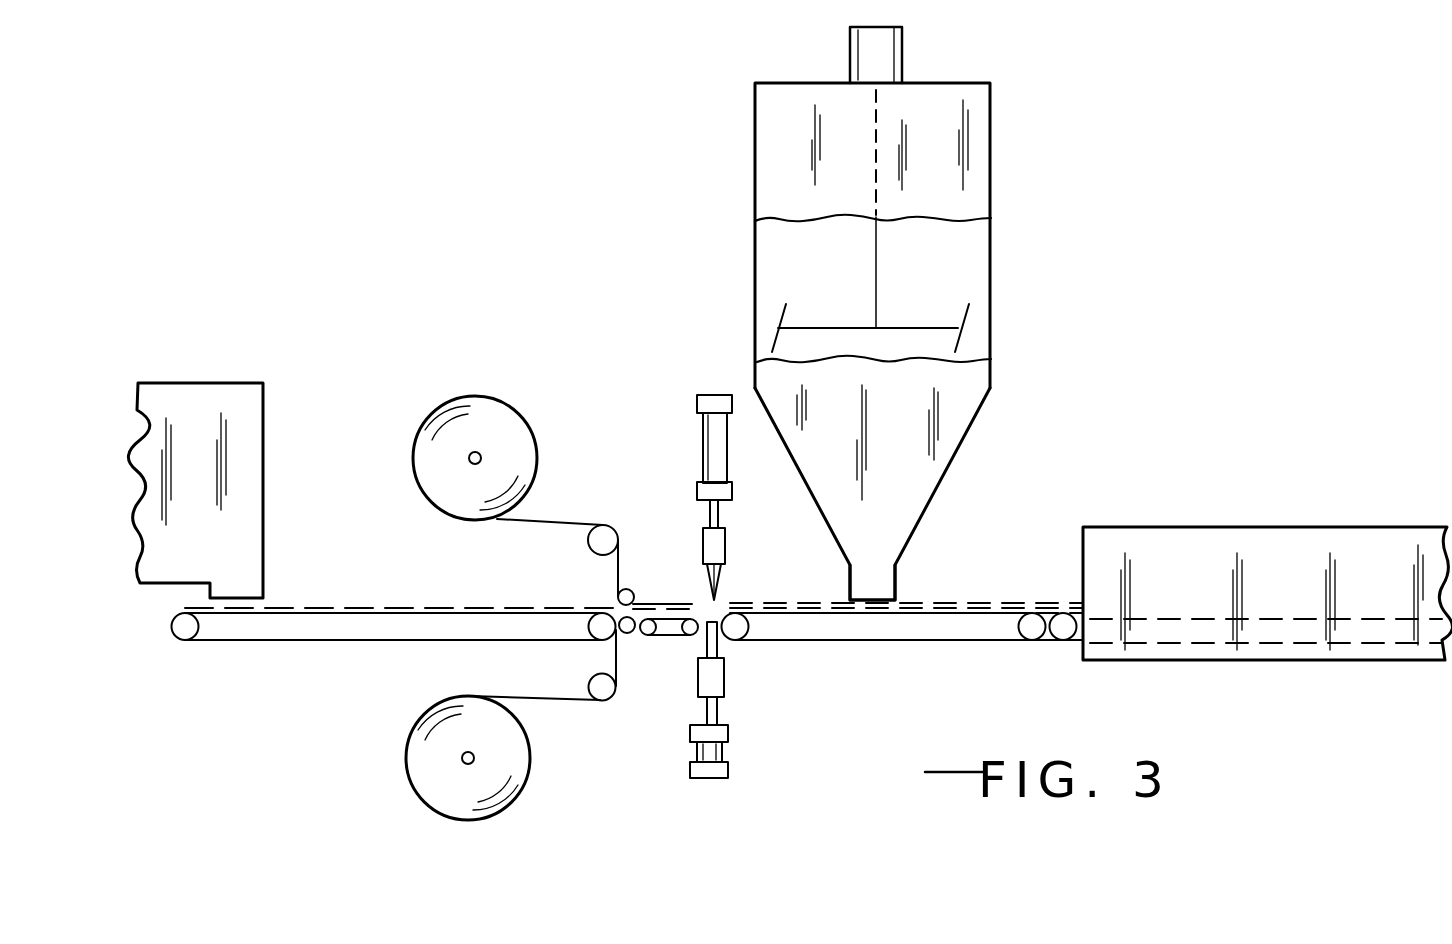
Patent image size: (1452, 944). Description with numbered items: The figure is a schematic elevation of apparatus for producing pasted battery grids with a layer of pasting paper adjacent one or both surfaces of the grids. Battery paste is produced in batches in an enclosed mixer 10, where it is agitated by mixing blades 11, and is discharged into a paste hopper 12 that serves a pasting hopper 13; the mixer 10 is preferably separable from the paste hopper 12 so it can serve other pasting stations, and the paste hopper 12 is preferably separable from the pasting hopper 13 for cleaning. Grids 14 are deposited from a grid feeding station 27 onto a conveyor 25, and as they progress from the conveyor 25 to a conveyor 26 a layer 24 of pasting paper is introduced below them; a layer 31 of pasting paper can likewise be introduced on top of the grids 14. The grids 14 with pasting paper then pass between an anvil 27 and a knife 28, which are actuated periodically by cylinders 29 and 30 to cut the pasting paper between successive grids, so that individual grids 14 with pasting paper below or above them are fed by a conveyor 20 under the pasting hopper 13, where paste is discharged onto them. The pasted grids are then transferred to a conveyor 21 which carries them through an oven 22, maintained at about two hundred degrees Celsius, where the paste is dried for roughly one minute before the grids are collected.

The mixer 10 is at (991, 247).
The mixing blades 11 is at (787, 312).
The paste hopper 12 is at (970, 432).
The pasting hopper 13 is at (897, 577).
The grids 14 is at (365, 600).
The conveyor 20 is at (858, 655).
The conveyor 21 is at (1200, 645).
The oven 22 is at (1250, 527).
The layer of pasting paper 24 is at (615, 661).
The conveyor 25 is at (265, 641).
The conveyor 26 is at (668, 645).
The grid feeding station / anvil 27 is at (263, 422).
The knife 28 is at (720, 596).
The cylinder 29 is at (728, 752).
The cylinder 30 is at (695, 446).
The layer of pasting paper 31 is at (615, 575).